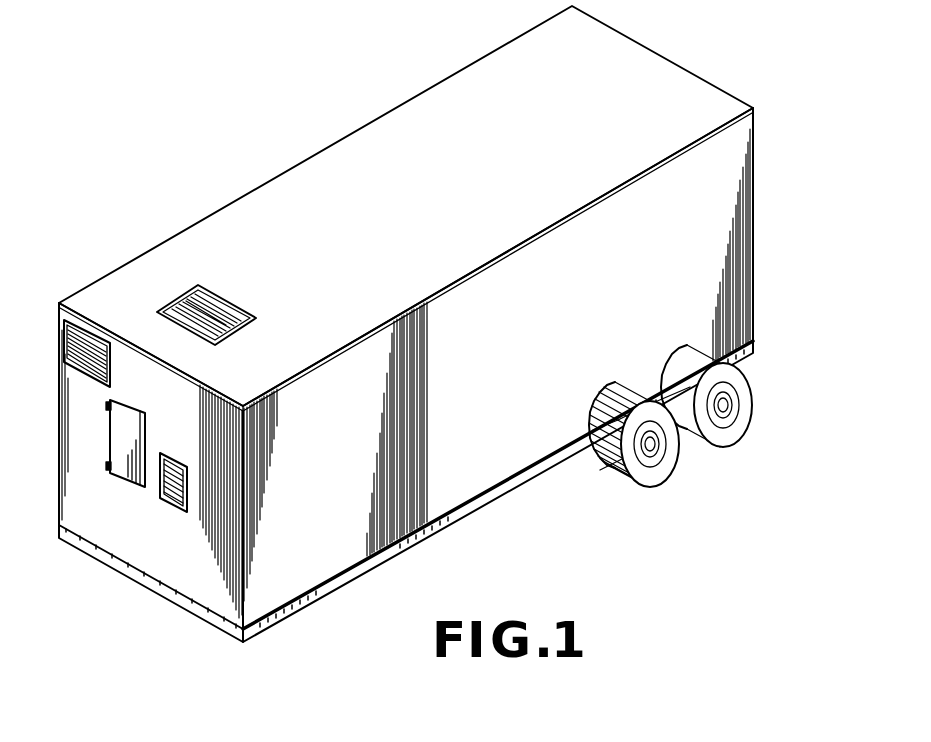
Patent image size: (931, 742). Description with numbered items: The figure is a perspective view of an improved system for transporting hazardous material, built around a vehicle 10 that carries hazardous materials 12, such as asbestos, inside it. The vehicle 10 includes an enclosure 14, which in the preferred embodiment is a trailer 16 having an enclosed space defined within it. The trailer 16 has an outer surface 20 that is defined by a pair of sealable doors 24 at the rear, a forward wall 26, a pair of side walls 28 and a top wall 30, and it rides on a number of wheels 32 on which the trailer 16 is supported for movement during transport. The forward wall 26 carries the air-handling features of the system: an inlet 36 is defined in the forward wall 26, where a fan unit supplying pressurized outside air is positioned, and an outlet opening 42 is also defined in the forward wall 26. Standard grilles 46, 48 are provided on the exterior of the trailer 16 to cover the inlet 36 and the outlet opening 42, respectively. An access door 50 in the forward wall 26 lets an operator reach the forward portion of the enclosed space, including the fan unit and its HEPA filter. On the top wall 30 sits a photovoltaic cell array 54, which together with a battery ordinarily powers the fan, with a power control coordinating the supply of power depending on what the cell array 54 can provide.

The vehicle 10 is at (489, 587).
The hazardous materials 12 is at (406, 317).
The enclosure 14 is at (388, 158).
The trailer 16 is at (298, 155).
The outer surface 20 is at (585, 98).
The sealable doors 24 is at (744, 98).
The forward wall 26 is at (175, 567).
The side walls 28 is at (495, 465).
The top wall 30 is at (467, 98).
The wheels 32 is at (650, 470).
The inlet 36 is at (170, 505).
The outlet opening 42 is at (70, 347).
The grille 46 is at (180, 462).
The grille 48 is at (78, 330).
The access door 50 is at (111, 434).
The photovoltaic cell array 54 is at (212, 285).